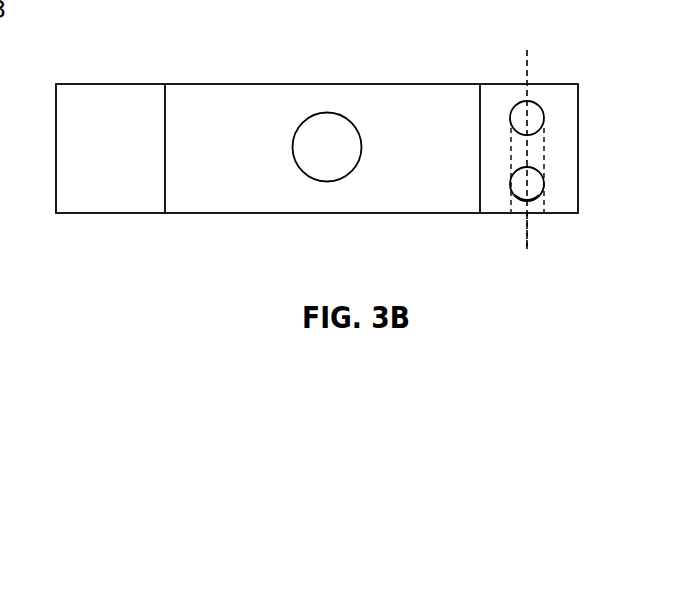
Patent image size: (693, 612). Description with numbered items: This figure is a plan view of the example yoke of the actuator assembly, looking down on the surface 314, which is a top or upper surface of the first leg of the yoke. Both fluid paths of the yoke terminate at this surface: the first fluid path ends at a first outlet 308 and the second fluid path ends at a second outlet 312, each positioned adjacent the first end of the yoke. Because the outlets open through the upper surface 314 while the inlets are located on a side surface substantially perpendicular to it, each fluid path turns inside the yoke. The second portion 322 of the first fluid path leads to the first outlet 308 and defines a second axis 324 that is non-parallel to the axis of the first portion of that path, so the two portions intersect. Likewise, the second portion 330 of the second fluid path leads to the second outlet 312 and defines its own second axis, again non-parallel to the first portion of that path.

The surface 314 is at (499, 111).
The first outlet 308 is at (542, 110).
The second portion 322 is at (527, 145).
The second outlet 312 is at (544, 184).
The second portion 330 is at (525, 200).
The second axis 324 is at (530, 243).